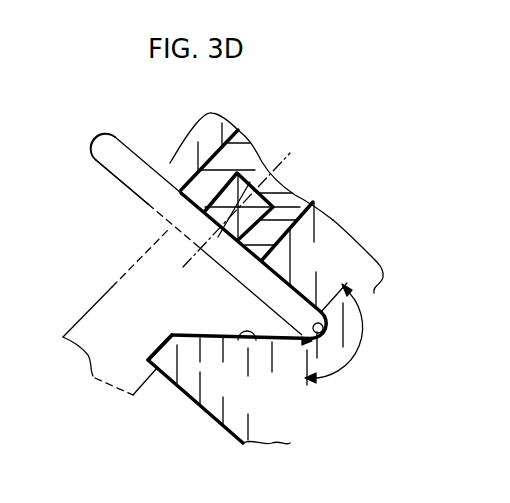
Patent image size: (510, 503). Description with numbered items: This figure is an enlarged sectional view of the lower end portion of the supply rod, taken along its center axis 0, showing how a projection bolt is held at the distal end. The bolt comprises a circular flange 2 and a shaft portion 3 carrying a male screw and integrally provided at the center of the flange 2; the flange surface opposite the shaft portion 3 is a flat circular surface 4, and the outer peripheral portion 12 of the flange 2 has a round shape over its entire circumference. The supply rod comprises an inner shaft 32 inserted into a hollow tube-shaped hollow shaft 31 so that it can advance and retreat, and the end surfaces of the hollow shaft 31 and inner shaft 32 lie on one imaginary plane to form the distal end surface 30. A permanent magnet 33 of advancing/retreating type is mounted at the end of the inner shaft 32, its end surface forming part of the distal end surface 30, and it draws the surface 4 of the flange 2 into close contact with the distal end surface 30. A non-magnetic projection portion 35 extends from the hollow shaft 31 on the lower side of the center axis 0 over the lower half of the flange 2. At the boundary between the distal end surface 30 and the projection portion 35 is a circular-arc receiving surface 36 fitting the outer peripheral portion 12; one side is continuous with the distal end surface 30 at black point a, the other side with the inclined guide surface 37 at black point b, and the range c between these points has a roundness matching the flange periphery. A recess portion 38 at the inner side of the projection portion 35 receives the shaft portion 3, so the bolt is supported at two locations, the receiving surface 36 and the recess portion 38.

The circular flange 2 is at (95, 160).
The shaft portion 3 is at (88, 311).
The surface 4 is at (153, 168).
The outer peripheral portion 12 is at (102, 136).
The distal end surface 30 is at (172, 226).
The hollow shaft 31 is at (340, 225).
The inner shaft 32 is at (297, 188).
The magnet 33 is at (249, 168).
The projection portion 35 is at (193, 401).
The circular-arc receiving surface 36 is at (345, 328).
The inclined guide surface 37 is at (225, 385).
The recess portion 38 is at (162, 347).
The center axis 0 is at (236, 210).
The black point a is at (323, 310).
The black point b is at (291, 345).
The range c is at (352, 363).